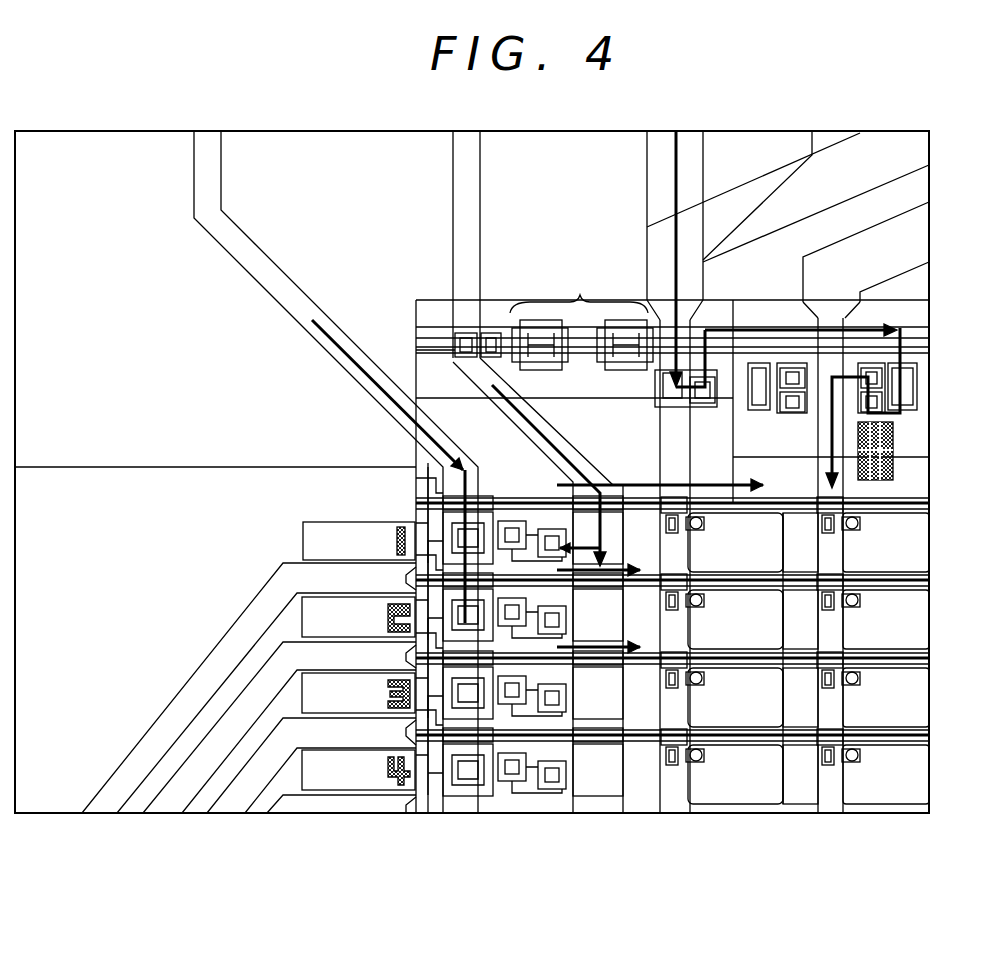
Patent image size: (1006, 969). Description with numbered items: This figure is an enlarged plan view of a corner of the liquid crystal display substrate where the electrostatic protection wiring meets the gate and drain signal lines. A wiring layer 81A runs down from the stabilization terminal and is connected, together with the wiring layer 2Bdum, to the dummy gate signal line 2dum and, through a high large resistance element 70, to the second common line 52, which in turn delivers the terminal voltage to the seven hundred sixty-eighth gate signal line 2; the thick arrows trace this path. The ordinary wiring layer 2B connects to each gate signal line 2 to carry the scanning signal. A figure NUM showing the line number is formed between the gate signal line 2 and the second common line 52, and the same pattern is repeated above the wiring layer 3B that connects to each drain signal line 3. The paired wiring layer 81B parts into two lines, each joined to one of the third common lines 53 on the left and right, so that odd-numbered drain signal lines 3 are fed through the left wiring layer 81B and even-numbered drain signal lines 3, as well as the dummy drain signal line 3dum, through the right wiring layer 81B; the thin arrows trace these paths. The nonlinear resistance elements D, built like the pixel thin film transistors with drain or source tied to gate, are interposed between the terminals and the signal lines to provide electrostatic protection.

The wiring layer 81B is at (463, 212).
The wiring layer 81A is at (647, 182).
The wiring layer 2Bdum is at (788, 196).
The wiring layer 2B is at (866, 260).
The gate signal line 2 is at (835, 795).
The dummy gate signal line 2dum is at (677, 793).
The second common line 52 is at (928, 350).
The high large resistance element 70 is at (581, 318).
The nonlinear resistance element D is at (780, 417).
The figure NUM is at (895, 478).
The dummy drain signal line 3dum is at (930, 503).
The drain signal line 3 is at (929, 580).
The third common line 53 is at (468, 816).
The wiring layer 3B is at (252, 767).